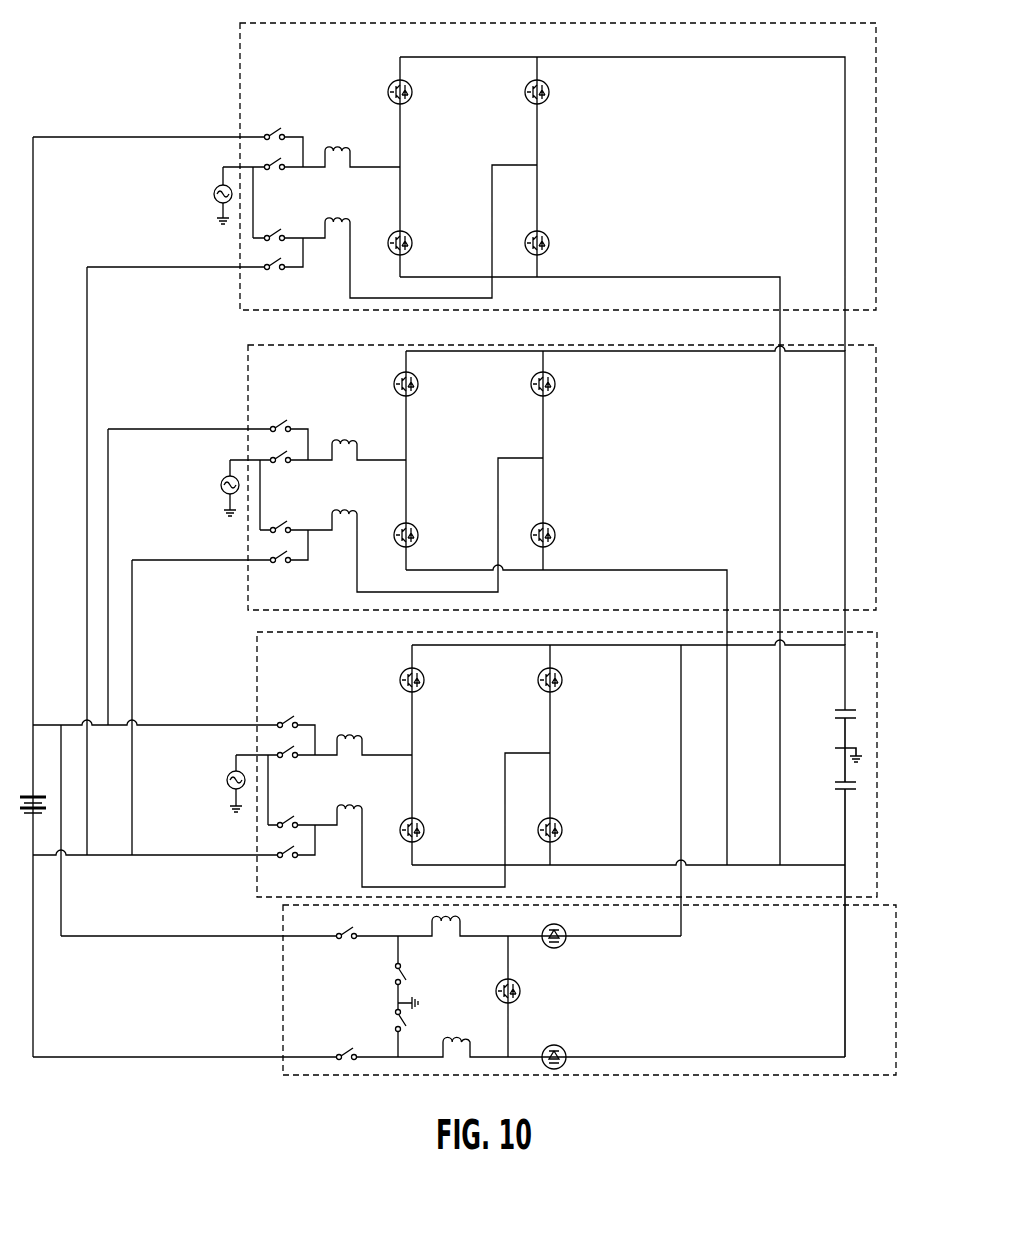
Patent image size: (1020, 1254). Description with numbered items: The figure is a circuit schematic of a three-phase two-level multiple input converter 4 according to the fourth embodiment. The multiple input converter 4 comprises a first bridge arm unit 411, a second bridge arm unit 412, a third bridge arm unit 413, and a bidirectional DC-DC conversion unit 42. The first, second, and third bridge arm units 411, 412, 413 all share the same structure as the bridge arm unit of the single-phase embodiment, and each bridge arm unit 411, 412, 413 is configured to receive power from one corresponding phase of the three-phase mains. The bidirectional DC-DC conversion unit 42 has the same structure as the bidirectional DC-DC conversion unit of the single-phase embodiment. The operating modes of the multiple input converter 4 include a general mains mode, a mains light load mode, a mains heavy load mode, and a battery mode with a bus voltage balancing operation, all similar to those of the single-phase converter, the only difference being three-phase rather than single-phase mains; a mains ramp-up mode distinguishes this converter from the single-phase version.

The multiple input converter 4 is at (84, 92).
The first bridge arm unit 411 is at (877, 128).
The second bridge arm unit 412 is at (877, 443).
The third bridge arm unit 413 is at (877, 717).
The bidirectional DC-DC conversion unit 42 is at (897, 940).